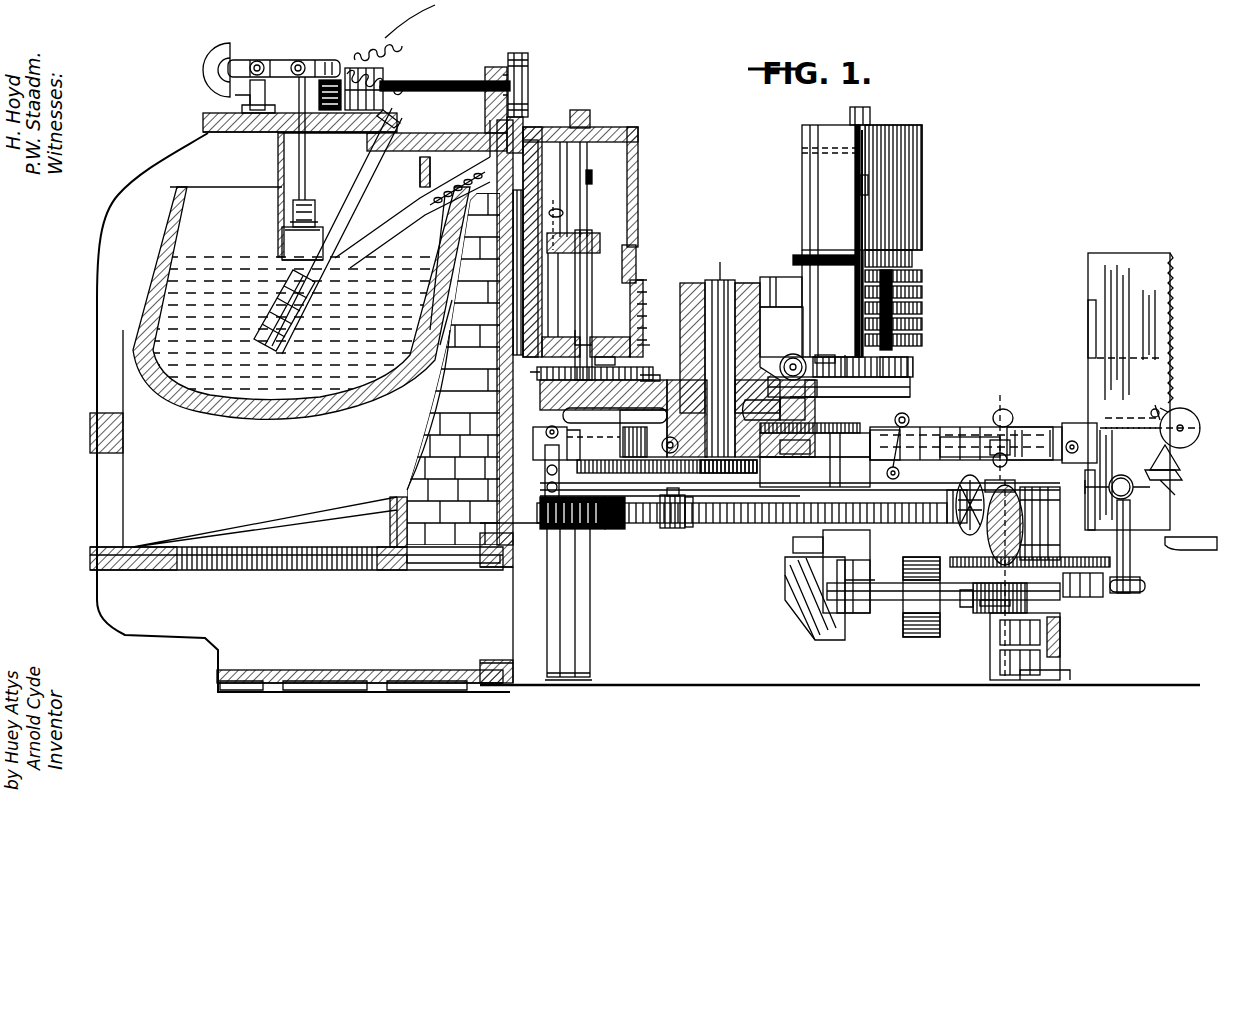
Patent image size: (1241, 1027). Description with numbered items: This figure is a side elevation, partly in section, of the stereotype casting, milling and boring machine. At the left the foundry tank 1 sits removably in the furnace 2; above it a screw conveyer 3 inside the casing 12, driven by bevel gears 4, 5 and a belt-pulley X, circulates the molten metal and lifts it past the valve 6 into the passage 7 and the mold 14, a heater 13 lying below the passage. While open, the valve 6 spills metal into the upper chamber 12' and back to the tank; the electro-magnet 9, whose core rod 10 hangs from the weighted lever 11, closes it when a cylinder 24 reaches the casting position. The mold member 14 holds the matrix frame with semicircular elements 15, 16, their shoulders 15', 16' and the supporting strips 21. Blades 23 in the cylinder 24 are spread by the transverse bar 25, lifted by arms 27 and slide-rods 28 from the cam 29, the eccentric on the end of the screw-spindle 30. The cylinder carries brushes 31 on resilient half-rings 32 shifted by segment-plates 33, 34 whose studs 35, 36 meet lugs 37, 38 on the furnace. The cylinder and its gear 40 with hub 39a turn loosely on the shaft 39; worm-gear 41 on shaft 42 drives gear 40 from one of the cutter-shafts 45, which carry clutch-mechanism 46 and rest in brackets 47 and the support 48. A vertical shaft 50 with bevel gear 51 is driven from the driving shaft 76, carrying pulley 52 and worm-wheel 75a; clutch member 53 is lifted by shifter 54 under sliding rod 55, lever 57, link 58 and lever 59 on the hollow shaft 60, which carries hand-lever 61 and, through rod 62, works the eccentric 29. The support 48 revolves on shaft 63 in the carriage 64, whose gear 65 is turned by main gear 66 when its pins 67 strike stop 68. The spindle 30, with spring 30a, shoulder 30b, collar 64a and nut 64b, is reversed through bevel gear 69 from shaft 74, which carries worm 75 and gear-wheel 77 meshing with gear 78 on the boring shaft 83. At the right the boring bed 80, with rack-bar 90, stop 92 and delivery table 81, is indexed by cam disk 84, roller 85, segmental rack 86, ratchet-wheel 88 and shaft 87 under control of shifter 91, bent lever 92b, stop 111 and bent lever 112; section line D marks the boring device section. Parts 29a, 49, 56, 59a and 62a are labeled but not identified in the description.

The foundry tank 1 is at (258, 420).
The furnace 2 is at (420, 468).
The screw conveyer 3 is at (312, 290).
The bevel gear 4 is at (378, 72).
The bevel gear 5 is at (402, 115).
The valve 6 is at (290, 214).
The passage 7 is at (425, 205).
The electro-magnet 9 is at (317, 58).
The magnet core rod 10 is at (305, 150).
The weighted lever 11 is at (238, 60).
The casing 12 is at (284, 243).
The upper chamber 12' is at (300, 194).
The heater 13 is at (455, 200).
The fixed mold member 14 is at (538, 127).
The upper semicircular element 15 is at (445, 262).
The shoulder 15' is at (459, 322).
The lower semicircular element 16 is at (506, 273).
The shoulder 16' is at (433, 410).
The matrix frame supporting strips 21 is at (566, 185).
The clutch blades 23 is at (589, 160).
The cylinder 24 is at (615, 127).
The transverse bar 25 is at (592, 190).
The hooks or arms 27 is at (590, 218).
The vertical slide-rods 28 is at (545, 428).
The cam-member or eccentric 29 is at (545, 475).
The lever pivot 29a is at (545, 506).
The screw-spindle 30 is at (710, 525).
The spring 30a is at (613, 528).
The fixed shoulder 30b is at (550, 530).
The brushes 31 is at (860, 302).
The resilient half-rings 32 is at (650, 302).
The segment-plate 33 is at (600, 357).
The segment-plate 34 is at (540, 372).
The studs 35 is at (540, 385).
The studs 36 is at (568, 427).
The lugs 37 is at (650, 378).
The lugs 38 is at (647, 340).
The shaft 39 is at (592, 285).
The gear hub 39a is at (586, 335).
The driving gear 40 is at (913, 372).
The worm-gear 41 is at (782, 365).
The shaft 42 is at (821, 391).
The cutter-shafts 45 is at (781, 332).
The clutch-mechanism 46 is at (762, 407).
The brackets 47 is at (768, 280).
The support 48 is at (913, 392).
The cross bar 49 is at (793, 257).
The vertical shaft 50 is at (795, 545).
The bevel gear 51 is at (815, 600).
The driving pulley 52 is at (905, 632).
The clutch member 53 is at (814, 416).
The shifter 54 is at (795, 426).
The sliding rod 55 is at (826, 460).
The block 56 is at (884, 451).
The lever 57 is at (900, 473).
The link 58 is at (960, 427).
The lever 59 is at (1034, 443).
The link 59a is at (888, 431).
The hollow shaft 60 is at (970, 443).
The hand-lever 61 is at (1003, 410).
The rod 62 is at (958, 490).
The coupling arm 62a is at (989, 477).
The shaft 63 is at (713, 280).
The carriage 64 is at (656, 428).
The collar 64a is at (660, 530).
The movable nut 64b is at (690, 528).
The gear 65 is at (737, 524).
The main gear 66 is at (673, 457).
The pins 67 is at (673, 528).
The stop 68 is at (750, 525).
The bevel gear 69 is at (958, 533).
The shaft 74 is at (1070, 600).
The worm 75 is at (990, 615).
The worm-wheel 75a is at (985, 592).
The driving shaft 76 is at (880, 583).
The gear-wheel 77 is at (980, 608).
The small gear-wheel 78 is at (1125, 595).
The boring bed 80 is at (1088, 338).
The delivery table 81 is at (1200, 537).
The boring driving shaft 83 is at (1080, 500).
The cam disk 84 is at (1110, 620).
The friction roller 85 is at (1145, 586).
The segmental rack 86 is at (1174, 486).
The shaft 87 is at (1200, 428).
The ratchet-wheel 88 is at (1192, 447).
The vertical rack-bar 90 is at (1172, 305).
The shifter 91 is at (1121, 475).
The stop 92 is at (1088, 300).
The bent lever 92b is at (1072, 423).
The stop 111 is at (1166, 410).
The bent lever 112 is at (1153, 410).
The belt-pulley X is at (528, 60).
The section line D— D is at (991, 514).